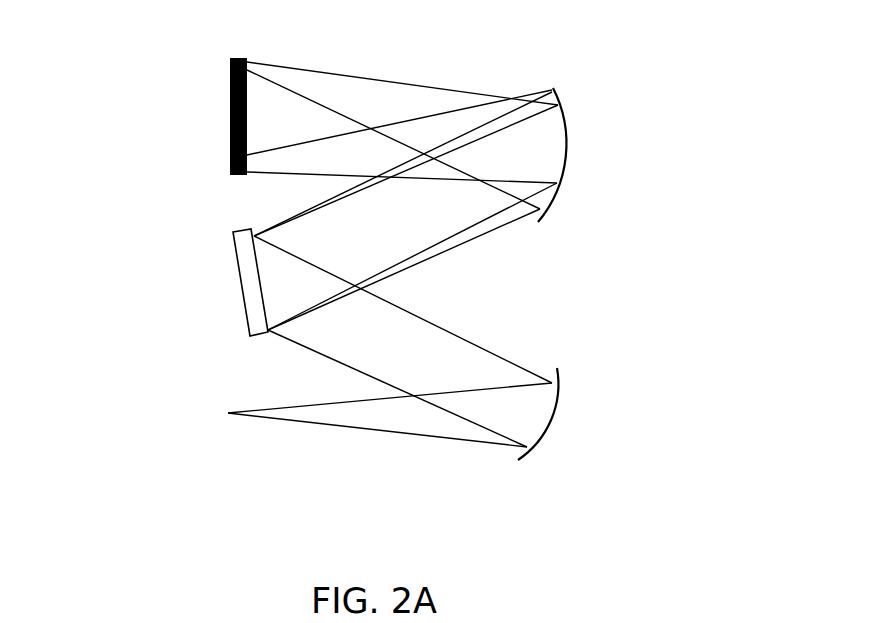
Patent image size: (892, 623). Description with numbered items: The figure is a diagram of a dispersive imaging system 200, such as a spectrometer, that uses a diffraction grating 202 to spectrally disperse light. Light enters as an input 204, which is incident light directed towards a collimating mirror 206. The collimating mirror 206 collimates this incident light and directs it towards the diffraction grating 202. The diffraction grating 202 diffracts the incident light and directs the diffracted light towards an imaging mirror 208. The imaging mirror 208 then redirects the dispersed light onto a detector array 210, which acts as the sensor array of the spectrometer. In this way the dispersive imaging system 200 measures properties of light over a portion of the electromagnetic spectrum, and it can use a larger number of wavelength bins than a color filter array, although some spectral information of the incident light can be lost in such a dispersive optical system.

The dispersive imaging system 200 is at (120, 99).
The diffraction grating 202 is at (239, 270).
The input 204 is at (167, 403).
The collimating mirror 206 is at (550, 412).
The imaging mirror 208 is at (565, 148).
The detector array 210 is at (231, 170).